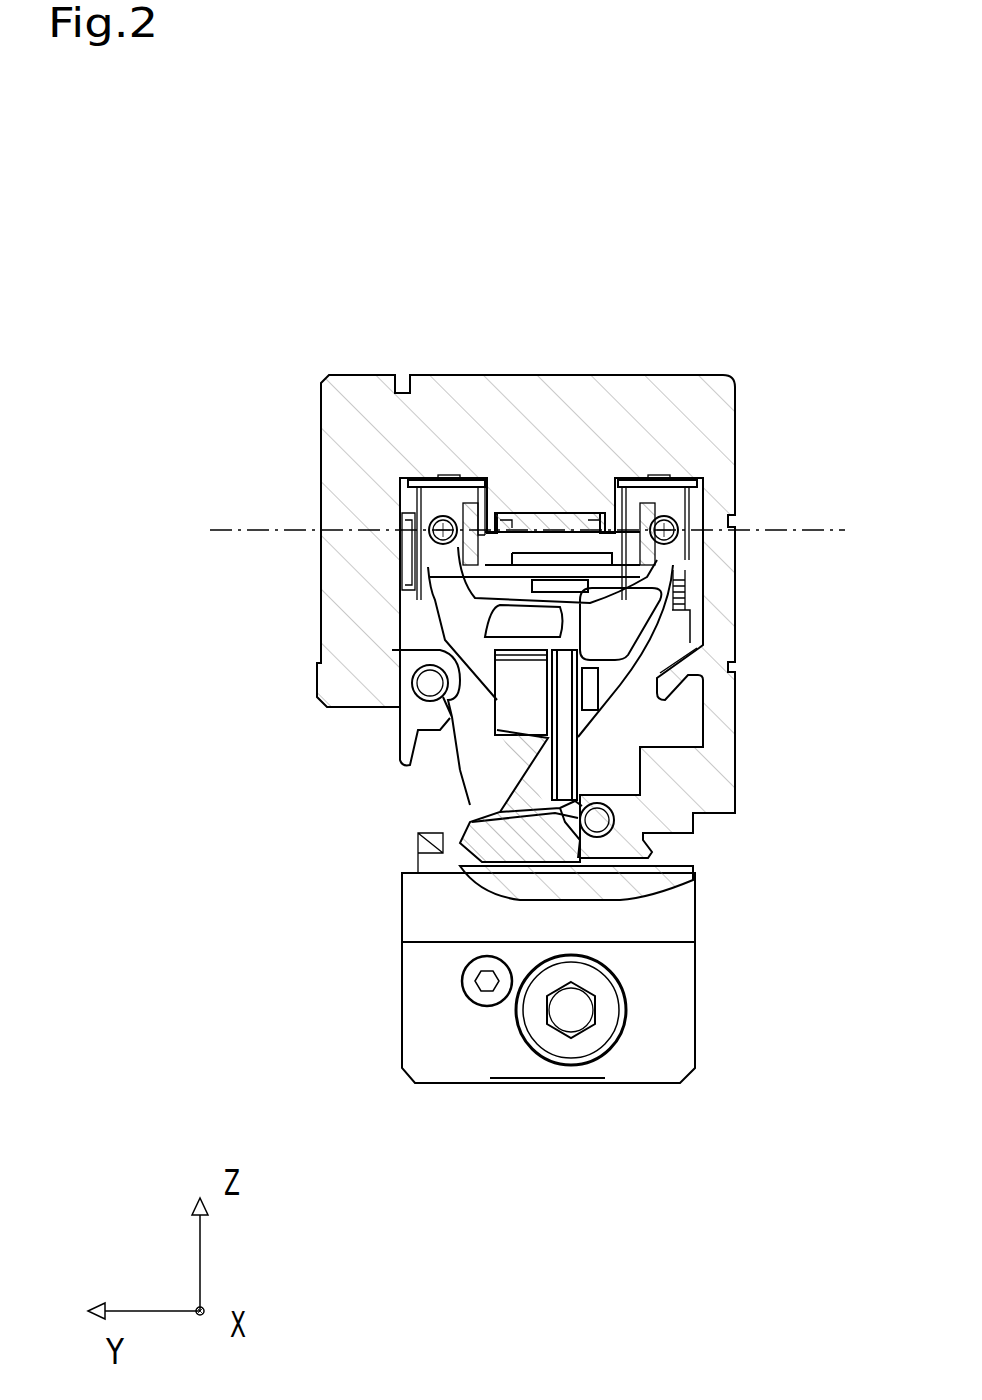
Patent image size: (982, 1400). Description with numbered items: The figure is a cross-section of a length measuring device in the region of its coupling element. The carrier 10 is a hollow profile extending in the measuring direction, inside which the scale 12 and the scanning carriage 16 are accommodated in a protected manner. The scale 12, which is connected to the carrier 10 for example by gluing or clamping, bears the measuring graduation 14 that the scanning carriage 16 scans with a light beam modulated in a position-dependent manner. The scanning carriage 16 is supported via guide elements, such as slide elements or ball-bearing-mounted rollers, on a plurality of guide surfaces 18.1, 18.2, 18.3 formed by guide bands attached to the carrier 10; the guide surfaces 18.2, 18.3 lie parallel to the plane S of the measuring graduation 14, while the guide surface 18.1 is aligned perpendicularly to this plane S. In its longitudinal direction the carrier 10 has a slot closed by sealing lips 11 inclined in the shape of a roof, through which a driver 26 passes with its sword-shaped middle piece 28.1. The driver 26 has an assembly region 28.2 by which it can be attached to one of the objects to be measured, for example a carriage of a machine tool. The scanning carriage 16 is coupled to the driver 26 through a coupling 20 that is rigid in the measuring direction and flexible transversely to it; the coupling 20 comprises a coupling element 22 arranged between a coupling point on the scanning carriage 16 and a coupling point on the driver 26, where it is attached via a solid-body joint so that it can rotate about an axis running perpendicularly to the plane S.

The carrier 10 is at (357, 467).
The sealing lips 11 is at (425, 788).
The scale 12 is at (530, 515).
The measuring graduation 14 is at (565, 515).
The scanning carriage 16 is at (680, 500).
The guide surface 18.1 is at (415, 530).
The guide surface 18.2 is at (430, 490).
The guide surface 18.3 is at (660, 485).
The coupling 20 is at (440, 632).
The coupling element 22 is at (667, 570).
The driver 26 is at (722, 958).
The sword-shaped middle piece 28.1 is at (465, 815).
The assembly region 28.2 is at (642, 1045).
The plane of the measuring graduation S is at (785, 529).